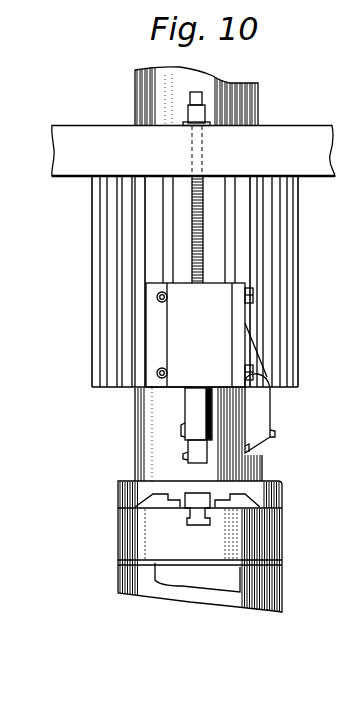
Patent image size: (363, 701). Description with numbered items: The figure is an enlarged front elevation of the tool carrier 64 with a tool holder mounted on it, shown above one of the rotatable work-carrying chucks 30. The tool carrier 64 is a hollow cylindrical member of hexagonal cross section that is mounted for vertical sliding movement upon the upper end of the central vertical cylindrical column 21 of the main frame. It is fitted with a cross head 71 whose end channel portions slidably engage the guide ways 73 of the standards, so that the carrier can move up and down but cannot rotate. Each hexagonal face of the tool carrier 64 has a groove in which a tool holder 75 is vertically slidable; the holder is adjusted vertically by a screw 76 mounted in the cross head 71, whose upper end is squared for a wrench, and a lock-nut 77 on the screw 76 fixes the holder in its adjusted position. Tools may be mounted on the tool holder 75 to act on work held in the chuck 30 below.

The central vertical cylindrical column 21 is at (258, 98).
The chuck 30 is at (200, 546).
The tool carrier 64 is at (125, 232).
The cross head 71 is at (107, 134).
The guide way 73 is at (103, 254).
The tool holder 75 is at (199, 335).
The screw 76 is at (203, 197).
The lock-nut 77 is at (188, 106).